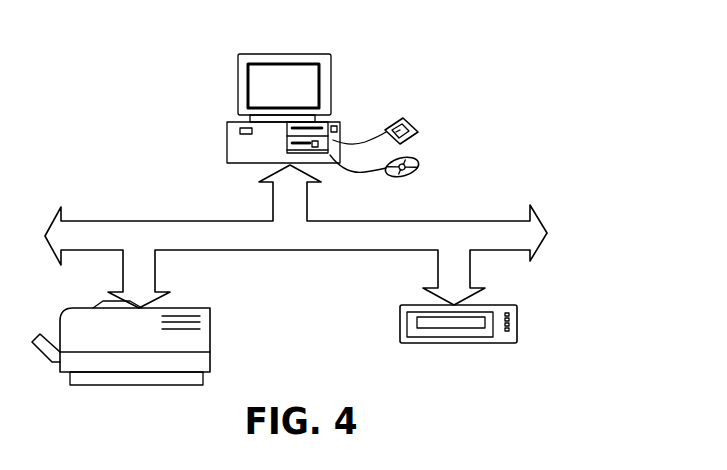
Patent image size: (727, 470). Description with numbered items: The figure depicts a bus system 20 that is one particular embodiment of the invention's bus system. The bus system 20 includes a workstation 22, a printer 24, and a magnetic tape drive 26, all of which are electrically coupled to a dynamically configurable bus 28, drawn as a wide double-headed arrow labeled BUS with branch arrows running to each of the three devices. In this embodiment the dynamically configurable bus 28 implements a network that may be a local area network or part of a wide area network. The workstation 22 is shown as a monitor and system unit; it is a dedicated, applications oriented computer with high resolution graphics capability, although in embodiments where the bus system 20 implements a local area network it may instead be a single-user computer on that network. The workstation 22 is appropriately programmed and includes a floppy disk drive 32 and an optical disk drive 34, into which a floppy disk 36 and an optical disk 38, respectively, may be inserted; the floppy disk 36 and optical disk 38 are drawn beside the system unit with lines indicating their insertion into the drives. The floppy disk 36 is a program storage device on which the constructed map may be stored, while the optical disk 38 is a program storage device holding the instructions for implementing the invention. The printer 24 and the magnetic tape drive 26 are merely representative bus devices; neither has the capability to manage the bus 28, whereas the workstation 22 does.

The bus system 20 is at (143, 121).
The workstation 22 is at (238, 77).
The printer 24 is at (210, 318).
The magnetic tape drive 26 is at (517, 313).
The dynamically configurable bus 28 is at (452, 221).
The floppy disk drive 32 is at (330, 124).
The optical disk drive 34 is at (331, 148).
The floppy disk 36 is at (410, 119).
The optical disk 38 is at (420, 158).